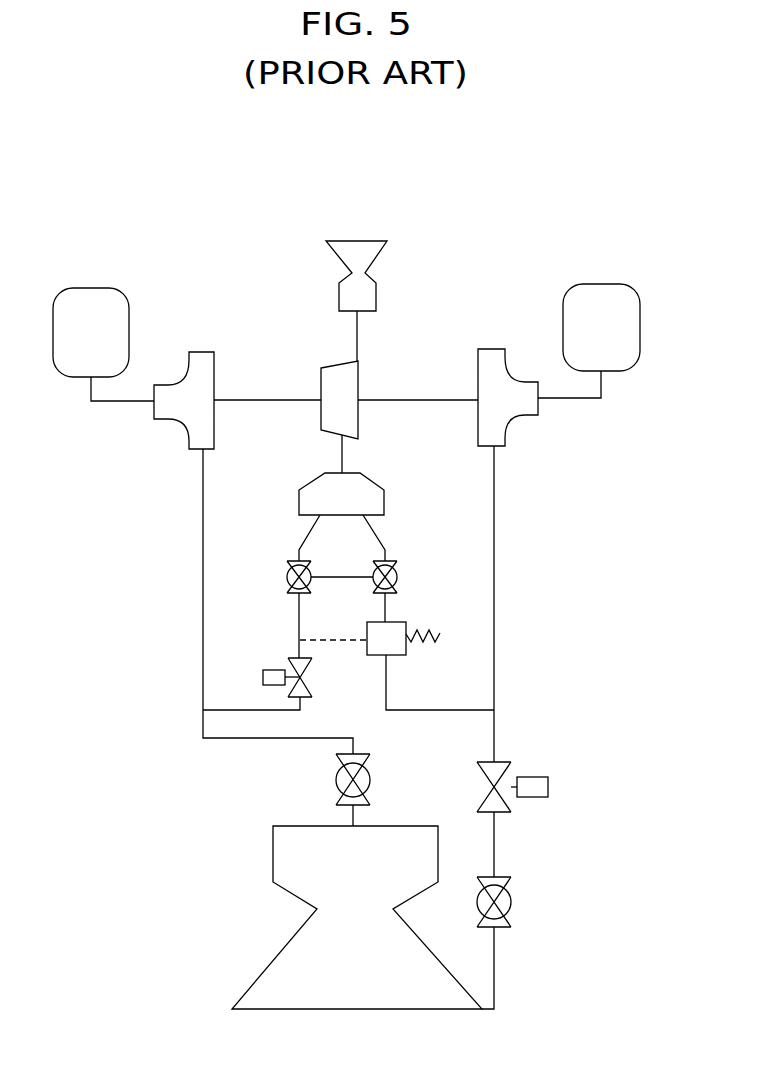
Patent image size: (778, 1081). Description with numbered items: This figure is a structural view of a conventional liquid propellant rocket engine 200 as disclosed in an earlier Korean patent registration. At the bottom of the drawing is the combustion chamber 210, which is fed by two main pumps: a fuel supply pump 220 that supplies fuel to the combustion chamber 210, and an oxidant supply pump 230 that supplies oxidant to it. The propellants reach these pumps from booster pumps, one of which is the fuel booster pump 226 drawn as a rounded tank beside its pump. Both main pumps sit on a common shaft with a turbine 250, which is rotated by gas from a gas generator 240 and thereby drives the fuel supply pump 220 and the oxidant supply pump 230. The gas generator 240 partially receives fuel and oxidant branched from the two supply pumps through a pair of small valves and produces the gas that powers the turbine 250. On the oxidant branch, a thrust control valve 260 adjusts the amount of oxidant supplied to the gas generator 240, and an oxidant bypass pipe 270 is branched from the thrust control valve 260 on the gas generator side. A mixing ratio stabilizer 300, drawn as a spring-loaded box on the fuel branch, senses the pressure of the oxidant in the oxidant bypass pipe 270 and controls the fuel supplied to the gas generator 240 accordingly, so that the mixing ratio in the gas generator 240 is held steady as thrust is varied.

The liquid propellant rocket engine 200 is at (493, 206).
The combustion chamber 210 is at (276, 853).
The fuel supply pump 220 is at (492, 352).
The fuel booster pump 226 is at (88, 288).
The oxidant supply pump 230 is at (201, 355).
The gas generator 240 is at (384, 503).
The turbine 250 is at (336, 367).
The thrust control valve 260 is at (275, 670).
The oxidant bypass pipe 270 is at (339, 650).
The mixing ratio stabilizer 300 is at (406, 648).